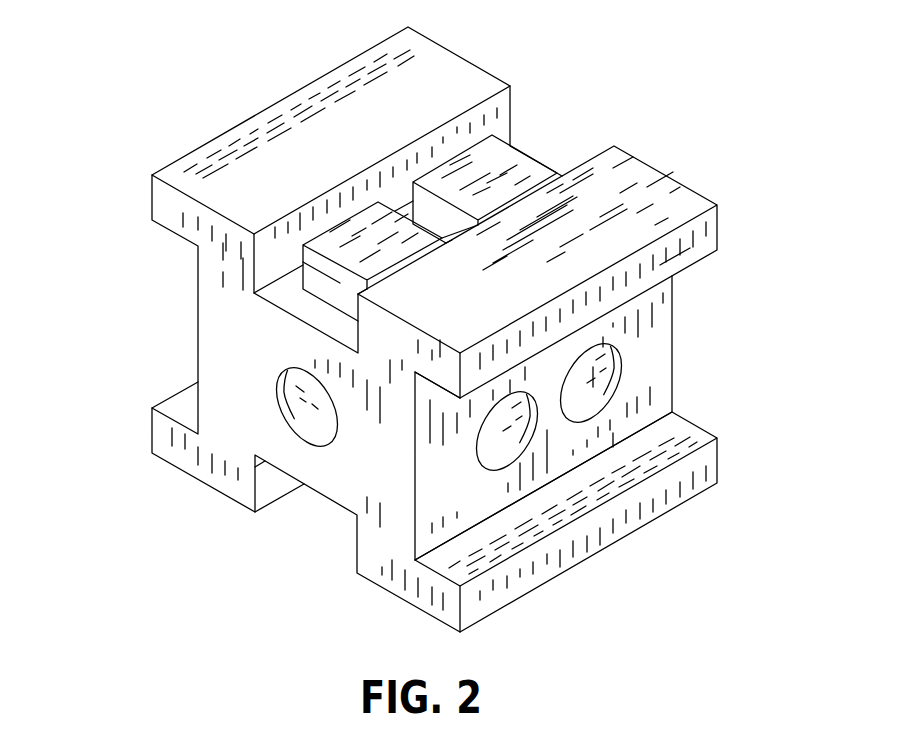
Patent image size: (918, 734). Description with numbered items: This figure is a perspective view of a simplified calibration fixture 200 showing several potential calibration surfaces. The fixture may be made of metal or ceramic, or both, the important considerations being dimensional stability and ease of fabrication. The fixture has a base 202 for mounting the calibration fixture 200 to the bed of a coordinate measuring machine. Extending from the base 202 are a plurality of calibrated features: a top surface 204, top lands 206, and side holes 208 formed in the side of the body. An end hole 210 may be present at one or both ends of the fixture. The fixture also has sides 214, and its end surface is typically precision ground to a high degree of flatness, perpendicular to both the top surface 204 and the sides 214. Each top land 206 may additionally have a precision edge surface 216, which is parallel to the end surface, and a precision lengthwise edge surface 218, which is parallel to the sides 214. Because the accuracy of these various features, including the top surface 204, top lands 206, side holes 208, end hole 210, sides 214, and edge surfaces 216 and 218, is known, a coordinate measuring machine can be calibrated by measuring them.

The calibration fixture 200 is at (166, 50).
The base 202 is at (422, 607).
The top surface 204 is at (332, 100).
The top lands 206 is at (502, 160).
The side holes 208 is at (510, 430).
The end hole 210 is at (307, 408).
The sides 214 is at (683, 250).
The precision edge surface 216 is at (333, 283).
The precision lengthwise edge surface 218 is at (396, 268).